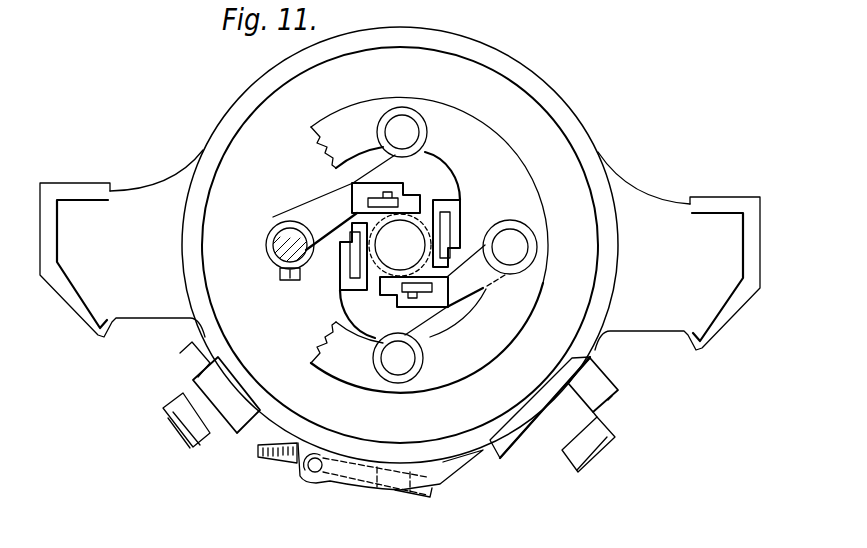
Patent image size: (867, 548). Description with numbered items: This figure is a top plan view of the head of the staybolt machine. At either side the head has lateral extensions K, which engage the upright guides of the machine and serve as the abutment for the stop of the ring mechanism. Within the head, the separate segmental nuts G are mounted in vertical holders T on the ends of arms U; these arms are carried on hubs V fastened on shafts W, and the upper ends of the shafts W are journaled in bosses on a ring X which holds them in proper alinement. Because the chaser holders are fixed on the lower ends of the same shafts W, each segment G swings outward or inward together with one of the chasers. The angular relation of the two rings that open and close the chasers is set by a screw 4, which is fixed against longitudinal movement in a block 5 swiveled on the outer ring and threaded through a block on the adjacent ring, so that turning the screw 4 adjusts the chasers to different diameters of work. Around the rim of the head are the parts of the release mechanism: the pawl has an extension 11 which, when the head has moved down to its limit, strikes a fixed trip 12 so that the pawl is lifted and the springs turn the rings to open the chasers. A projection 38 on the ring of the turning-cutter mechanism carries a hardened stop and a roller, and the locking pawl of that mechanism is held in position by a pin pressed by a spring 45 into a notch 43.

The lateral extensions of the head K is at (400, 245).
The ring X is at (465, 132).
The shafts W is at (412, 124).
The segmental nuts G is at (455, 253).
The arms U is at (438, 177).
The vertical holders T is at (443, 217).
The hubs V is at (280, 215).
The projection on the ring 38 is at (232, 392).
The notch 43 is at (181, 357).
The spring 45 is at (200, 447).
The screw 4 is at (277, 462).
The block 5 is at (397, 492).
The extension of the pawl 11 is at (510, 462).
The fixed trip 12 is at (608, 438).